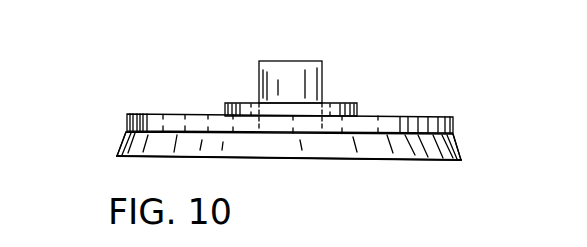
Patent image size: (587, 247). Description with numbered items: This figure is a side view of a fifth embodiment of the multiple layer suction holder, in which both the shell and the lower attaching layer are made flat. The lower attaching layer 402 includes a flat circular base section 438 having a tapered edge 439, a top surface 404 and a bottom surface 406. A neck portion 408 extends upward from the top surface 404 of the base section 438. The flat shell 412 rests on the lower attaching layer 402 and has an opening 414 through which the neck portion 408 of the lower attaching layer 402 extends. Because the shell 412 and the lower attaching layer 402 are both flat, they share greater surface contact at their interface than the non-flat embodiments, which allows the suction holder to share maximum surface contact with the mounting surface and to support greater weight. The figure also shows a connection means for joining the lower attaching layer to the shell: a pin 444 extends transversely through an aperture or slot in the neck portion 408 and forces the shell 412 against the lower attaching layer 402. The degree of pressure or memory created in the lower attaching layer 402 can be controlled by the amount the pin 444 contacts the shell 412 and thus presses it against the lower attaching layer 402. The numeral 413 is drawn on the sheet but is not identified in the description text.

The lower attaching layer 402 is at (455, 144).
The top surface of the base section 404 is at (149, 129).
The bottom surface 406 is at (342, 158).
The neck portion 408 is at (285, 60).
The flat shell 412 is at (397, 117).
The flange 413 is at (183, 114).
The opening 414 is at (258, 127).
The flat circular base section 438 is at (123, 143).
The tapered edge 439 is at (461, 160).
The pin 444 is at (341, 103).